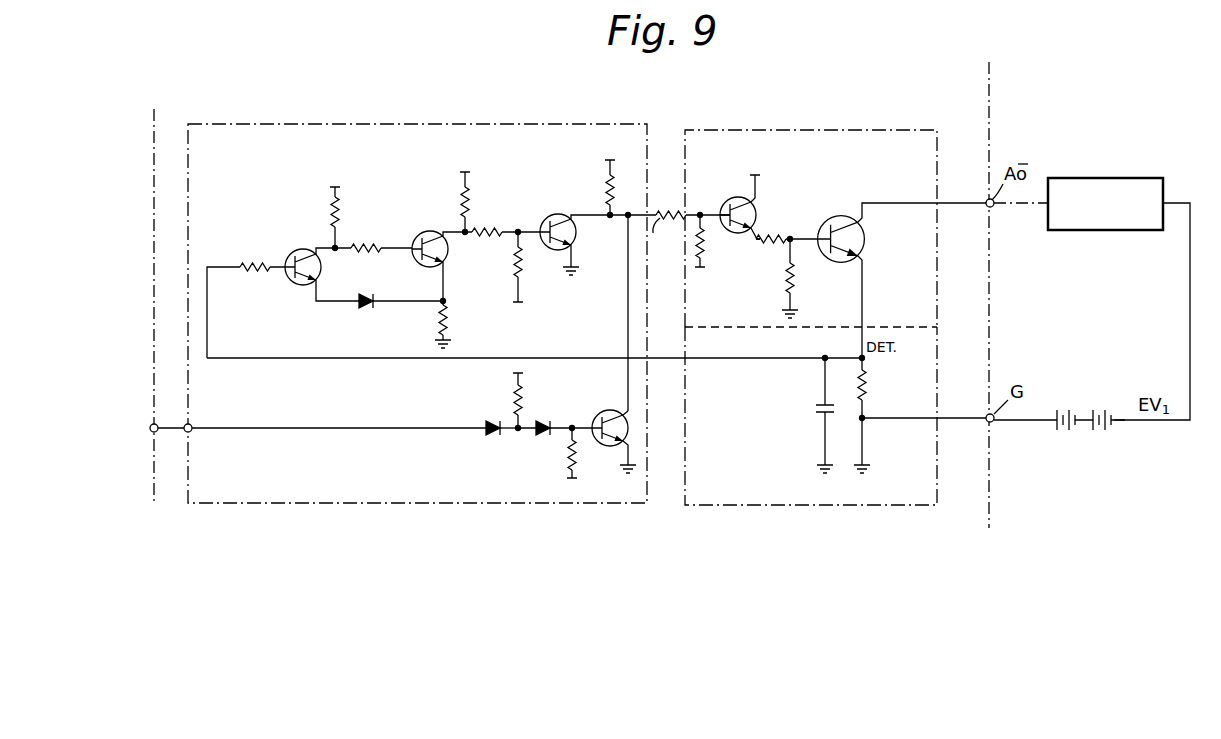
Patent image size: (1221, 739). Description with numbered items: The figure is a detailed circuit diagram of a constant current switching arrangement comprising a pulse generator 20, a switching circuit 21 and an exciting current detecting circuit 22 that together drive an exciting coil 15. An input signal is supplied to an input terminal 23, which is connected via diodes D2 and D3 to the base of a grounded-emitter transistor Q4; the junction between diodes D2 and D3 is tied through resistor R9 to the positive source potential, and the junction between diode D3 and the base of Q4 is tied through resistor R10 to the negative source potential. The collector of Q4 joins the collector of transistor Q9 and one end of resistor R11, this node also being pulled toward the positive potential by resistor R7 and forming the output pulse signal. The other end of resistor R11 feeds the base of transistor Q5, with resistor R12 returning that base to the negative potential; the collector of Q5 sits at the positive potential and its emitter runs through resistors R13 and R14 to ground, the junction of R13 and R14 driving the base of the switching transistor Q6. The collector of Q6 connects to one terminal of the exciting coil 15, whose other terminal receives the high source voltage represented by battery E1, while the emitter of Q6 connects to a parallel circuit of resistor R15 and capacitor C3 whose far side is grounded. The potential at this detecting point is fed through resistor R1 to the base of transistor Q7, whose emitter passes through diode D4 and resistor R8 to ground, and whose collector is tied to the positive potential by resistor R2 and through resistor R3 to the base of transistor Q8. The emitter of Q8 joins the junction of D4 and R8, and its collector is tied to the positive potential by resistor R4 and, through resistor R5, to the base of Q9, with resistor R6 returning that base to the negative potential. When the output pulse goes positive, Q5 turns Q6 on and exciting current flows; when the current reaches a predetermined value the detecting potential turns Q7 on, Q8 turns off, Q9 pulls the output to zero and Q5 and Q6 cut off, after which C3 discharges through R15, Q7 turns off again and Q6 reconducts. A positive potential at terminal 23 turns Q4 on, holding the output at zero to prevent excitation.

The pulse generator 20 is at (475, 112).
The switching circuit 21 is at (880, 116).
The exciting current detecting circuit 22 is at (803, 506).
The input terminal 23 is at (158, 432).
The exciting coil 15 is at (1107, 178).
The resistor R1 is at (253, 263).
The resistor R2 is at (340, 218).
The resistor R3 is at (368, 244).
The resistor R4 is at (471, 202).
The resistor R5 is at (492, 226).
The resistor R6 is at (524, 270).
The resistor R7 is at (606, 180).
The resistor R8 is at (449, 328).
The resistor R9 is at (523, 400).
The resistor R10 is at (577, 456).
The resistor R11 is at (670, 210).
The resistor R12 is at (706, 242).
The resistor R13 is at (770, 234).
The resistor R14 is at (796, 284).
The resistor R15 is at (867, 392).
The transistor Q4 is at (606, 410).
The transistor Q5 is at (730, 200).
The switching transistor Q6 is at (834, 214).
The transistor Q7 is at (303, 258).
The transistor Q8 is at (432, 237).
The transistor Q9 is at (556, 215).
The diode D2 is at (489, 424).
The diode D3 is at (546, 424).
The diode D4 is at (368, 294).
The capacitor C3 is at (815, 408).
The battery E1 is at (1059, 405).